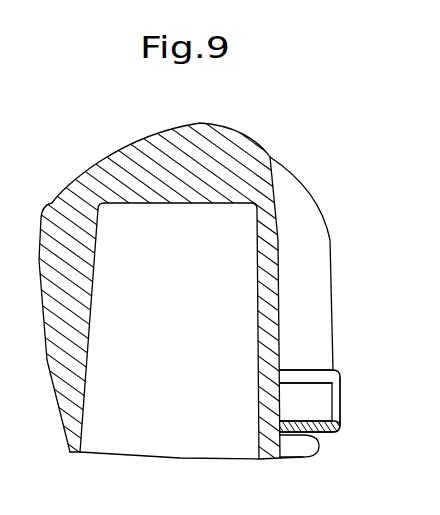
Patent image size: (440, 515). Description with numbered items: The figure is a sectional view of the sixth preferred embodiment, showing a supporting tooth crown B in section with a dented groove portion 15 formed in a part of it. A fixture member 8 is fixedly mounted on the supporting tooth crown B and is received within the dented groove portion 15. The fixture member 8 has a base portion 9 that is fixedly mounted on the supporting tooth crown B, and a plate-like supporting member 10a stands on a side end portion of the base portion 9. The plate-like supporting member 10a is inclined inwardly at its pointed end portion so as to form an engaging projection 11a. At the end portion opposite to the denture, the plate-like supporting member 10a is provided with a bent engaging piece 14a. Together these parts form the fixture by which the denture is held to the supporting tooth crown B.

The supporting tooth crown B is at (271, 160).
The dented groove portion 15 is at (330, 236).
The fixture member 8 is at (342, 435).
The engaging projection 11a is at (310, 372).
The plate-like supporting member 10a is at (310, 393).
The bent engaging piece 14a is at (332, 412).
The base portion 9 is at (315, 437).